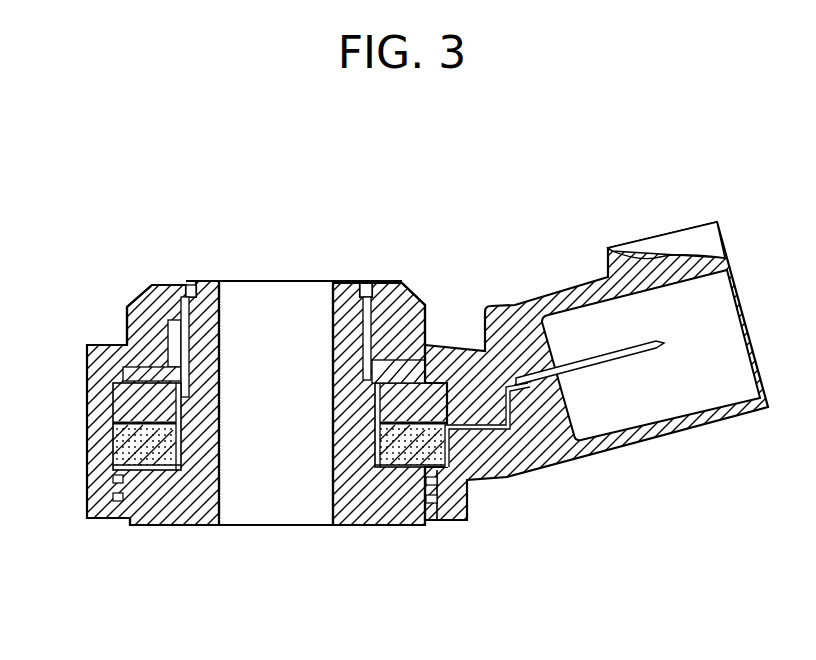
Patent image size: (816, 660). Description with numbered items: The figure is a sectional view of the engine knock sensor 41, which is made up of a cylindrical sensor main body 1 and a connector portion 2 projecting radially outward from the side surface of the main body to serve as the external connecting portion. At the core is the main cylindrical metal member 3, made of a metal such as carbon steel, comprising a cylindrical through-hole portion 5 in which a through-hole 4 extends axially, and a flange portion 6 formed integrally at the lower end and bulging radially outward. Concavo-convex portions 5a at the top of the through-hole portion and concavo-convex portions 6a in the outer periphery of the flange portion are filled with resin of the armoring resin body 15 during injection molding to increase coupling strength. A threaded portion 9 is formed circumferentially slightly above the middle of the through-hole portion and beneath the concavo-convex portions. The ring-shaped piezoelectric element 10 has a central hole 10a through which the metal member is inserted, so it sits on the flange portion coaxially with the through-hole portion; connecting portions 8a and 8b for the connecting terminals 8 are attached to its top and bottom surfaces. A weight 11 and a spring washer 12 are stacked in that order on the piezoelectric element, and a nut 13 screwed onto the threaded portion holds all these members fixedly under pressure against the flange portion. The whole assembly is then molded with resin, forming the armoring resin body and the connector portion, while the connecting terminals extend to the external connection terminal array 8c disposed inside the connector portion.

The cylindrical sensor main body 1 is at (388, 283).
The connector portion 2 is at (553, 290).
The main cylindrical metal member 3 is at (370, 510).
The through-hole 4 is at (222, 430).
The cylindrical through-hole portion 5 is at (222, 340).
The concavo-convex portions 5a is at (173, 285).
The flange portion 6 is at (163, 505).
The concavo-convex portions 6a is at (95, 518).
The connecting terminals 8 is at (510, 478).
The connecting portion 8a is at (474, 310).
The connecting portion 8b is at (417, 523).
The external connection terminal array 8c is at (600, 364).
The threaded portion 9 is at (367, 283).
The piezoelectric element 10 is at (398, 523).
The hole 10a is at (333, 462).
The weight 11 is at (123, 407).
The spring washer 12 is at (122, 343).
The nut 13 is at (127, 307).
The armoring resin body 15 is at (418, 300).
The engine knock sensor 41 is at (262, 184).